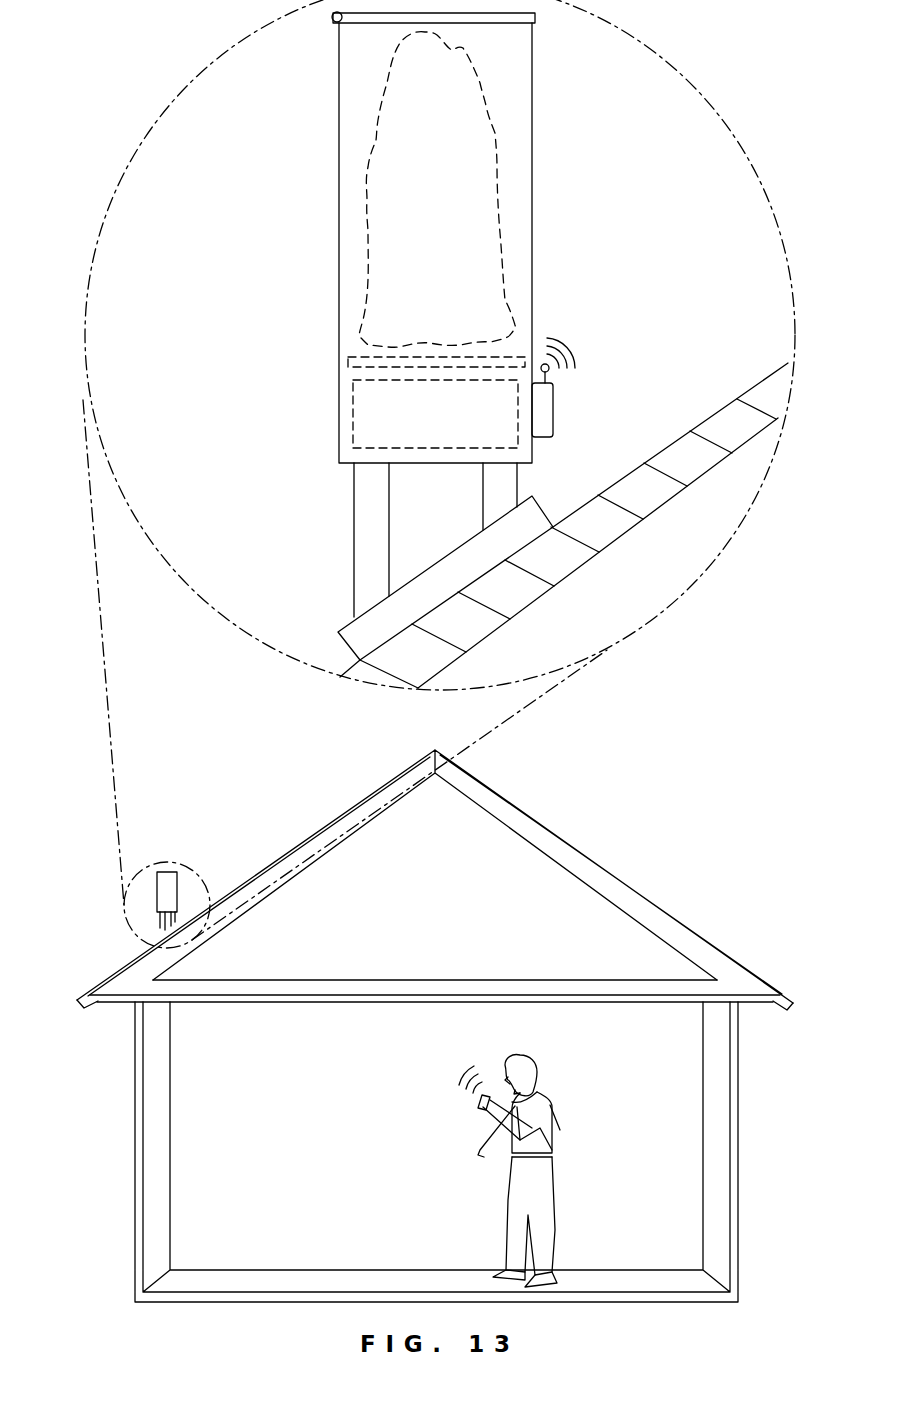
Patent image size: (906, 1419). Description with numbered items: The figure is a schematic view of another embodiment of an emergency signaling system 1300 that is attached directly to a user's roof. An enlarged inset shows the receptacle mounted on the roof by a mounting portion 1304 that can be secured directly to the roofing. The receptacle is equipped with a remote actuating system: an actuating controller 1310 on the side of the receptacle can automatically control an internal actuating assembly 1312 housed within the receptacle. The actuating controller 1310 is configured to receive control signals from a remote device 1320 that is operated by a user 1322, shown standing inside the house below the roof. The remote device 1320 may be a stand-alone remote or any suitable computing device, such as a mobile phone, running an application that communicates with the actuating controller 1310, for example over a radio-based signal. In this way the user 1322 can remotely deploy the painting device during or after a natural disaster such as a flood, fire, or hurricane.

The emergency signaling system 1300 is at (160, 848).
The mounting portion 1304 is at (329, 520).
The actuating controller 1310 is at (553, 408).
The internal actuating assembly 1312 is at (355, 413).
The remote device 1320 is at (480, 1110).
The user 1322 is at (553, 1130).